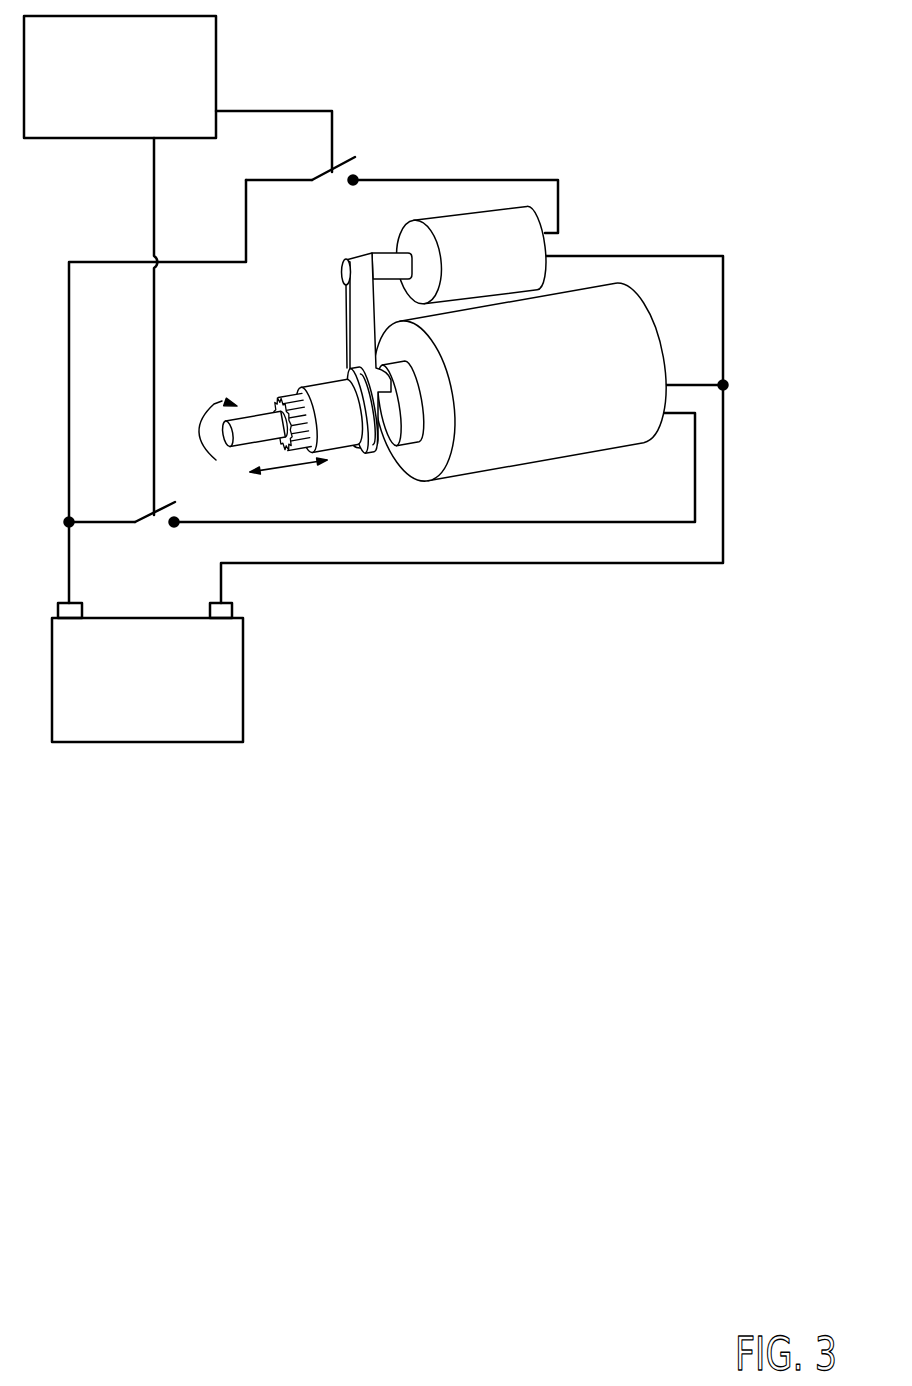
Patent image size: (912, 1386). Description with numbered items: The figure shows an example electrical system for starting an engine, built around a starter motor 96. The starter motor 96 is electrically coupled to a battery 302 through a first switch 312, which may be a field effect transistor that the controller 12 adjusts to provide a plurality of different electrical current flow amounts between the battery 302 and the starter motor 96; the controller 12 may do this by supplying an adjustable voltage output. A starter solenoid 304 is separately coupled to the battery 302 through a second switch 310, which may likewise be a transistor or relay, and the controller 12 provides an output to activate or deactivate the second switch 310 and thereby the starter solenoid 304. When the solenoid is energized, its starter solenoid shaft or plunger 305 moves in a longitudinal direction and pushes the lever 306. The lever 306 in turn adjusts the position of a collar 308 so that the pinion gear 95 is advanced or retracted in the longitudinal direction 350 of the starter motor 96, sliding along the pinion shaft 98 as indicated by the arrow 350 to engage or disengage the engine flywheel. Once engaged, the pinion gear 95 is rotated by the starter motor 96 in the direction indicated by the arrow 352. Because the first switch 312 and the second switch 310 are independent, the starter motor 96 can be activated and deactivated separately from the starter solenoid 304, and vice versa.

The controller 12 is at (107, 92).
The second switch 310 is at (327, 168).
The starter solenoid 304 is at (443, 215).
The starter solenoid shaft or plunger 305 is at (387, 253).
The lever 306 is at (355, 302).
The pinion gear 95 is at (288, 402).
The arrow 352 is at (200, 437).
The pinion shaft 98 is at (248, 435).
The longitudinal direction 350 is at (288, 470).
The collar 308 is at (361, 452).
The starter motor 96 is at (585, 457).
The first switch 312 is at (148, 512).
The battery 302 is at (128, 692).